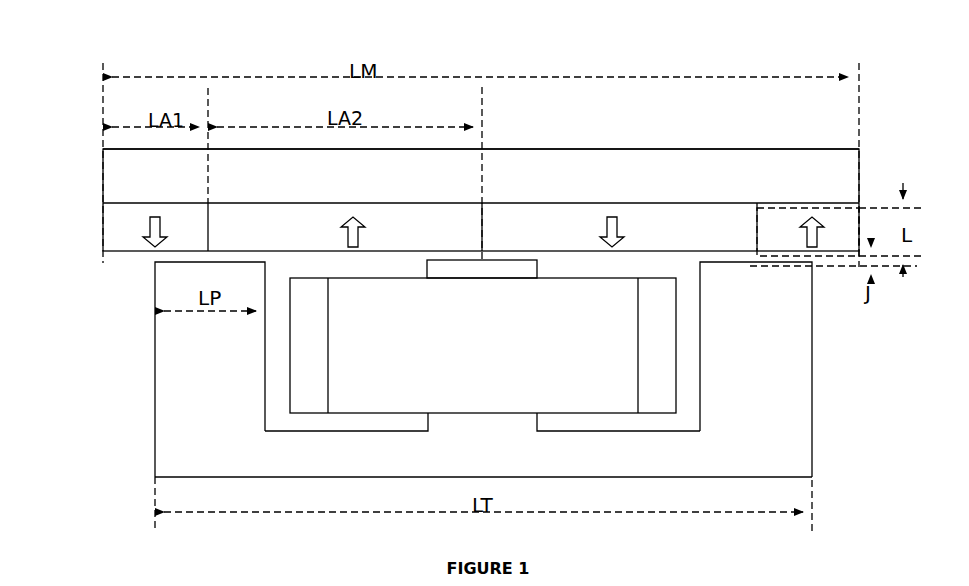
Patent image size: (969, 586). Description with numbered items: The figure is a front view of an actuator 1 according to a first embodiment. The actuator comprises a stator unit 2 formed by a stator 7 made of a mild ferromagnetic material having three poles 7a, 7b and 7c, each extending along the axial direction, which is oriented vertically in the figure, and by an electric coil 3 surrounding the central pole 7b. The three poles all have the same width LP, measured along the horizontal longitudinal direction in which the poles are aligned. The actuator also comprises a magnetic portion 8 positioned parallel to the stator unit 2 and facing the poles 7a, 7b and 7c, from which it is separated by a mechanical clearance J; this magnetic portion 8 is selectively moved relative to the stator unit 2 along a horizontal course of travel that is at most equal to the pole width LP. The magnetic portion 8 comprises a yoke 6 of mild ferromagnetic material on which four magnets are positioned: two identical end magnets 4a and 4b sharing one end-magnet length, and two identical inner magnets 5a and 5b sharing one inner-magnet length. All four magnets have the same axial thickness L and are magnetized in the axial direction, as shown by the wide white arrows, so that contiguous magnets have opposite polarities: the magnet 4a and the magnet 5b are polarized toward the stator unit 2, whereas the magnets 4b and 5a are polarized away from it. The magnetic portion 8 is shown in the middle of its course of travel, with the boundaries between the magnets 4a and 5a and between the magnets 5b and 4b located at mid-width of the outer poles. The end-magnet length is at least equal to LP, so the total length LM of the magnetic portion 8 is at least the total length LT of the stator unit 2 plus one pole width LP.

The actuator 1 is at (471, 146).
The stator unit 2 is at (465, 402).
The electric coil 3 is at (613, 374).
The end magnet 4a is at (117, 239).
The end magnet 4b is at (847, 238).
The inner magnet 5a is at (458, 228).
The inner magnet 5b is at (527, 228).
The yoke 6 is at (652, 182).
The stator 7 is at (465, 403).
The pole 7a is at (225, 397).
The central pole 7b is at (460, 423).
The pole 7c is at (772, 342).
The magnetic portion 8 is at (791, 144).